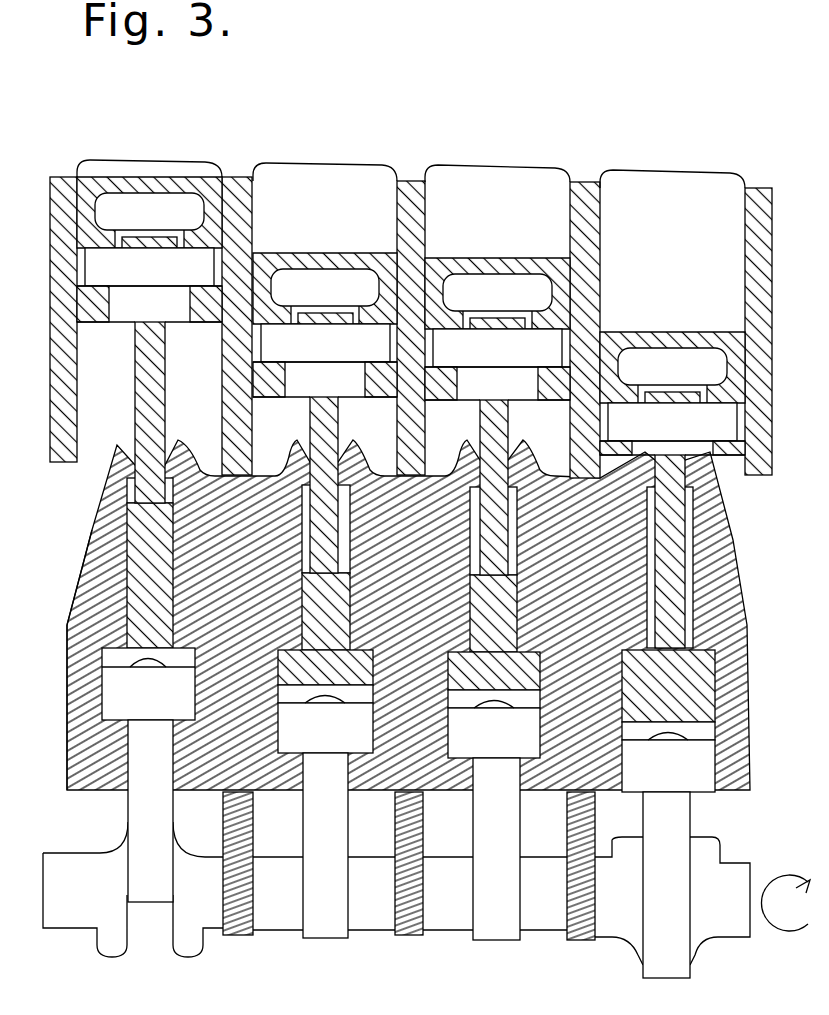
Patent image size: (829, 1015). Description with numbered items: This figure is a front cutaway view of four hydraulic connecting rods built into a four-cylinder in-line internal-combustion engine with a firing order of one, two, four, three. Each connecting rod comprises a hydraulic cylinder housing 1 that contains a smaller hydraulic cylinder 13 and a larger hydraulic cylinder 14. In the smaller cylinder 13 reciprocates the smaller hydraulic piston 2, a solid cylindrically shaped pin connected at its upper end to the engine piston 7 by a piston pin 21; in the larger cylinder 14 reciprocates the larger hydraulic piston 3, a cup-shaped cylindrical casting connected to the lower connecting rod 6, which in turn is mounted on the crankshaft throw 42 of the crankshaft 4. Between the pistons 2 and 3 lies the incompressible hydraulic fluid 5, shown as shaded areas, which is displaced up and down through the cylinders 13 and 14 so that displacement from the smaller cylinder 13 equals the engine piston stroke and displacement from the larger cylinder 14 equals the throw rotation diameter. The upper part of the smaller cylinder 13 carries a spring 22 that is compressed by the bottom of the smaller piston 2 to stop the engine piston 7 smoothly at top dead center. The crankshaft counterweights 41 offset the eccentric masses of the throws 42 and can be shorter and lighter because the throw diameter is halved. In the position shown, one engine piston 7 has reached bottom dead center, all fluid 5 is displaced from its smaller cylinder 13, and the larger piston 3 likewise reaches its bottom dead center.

The hydraulic cylinder housing 1 is at (117, 450).
The smaller hydraulic piston 2 is at (140, 362).
The larger hydraulic piston 3 is at (86, 678).
The crankshaft 4 is at (210, 912).
The hydraulic fluid 5 is at (125, 517).
The lower connecting rod 6 is at (136, 798).
The engine piston 7 is at (217, 186).
The smaller hydraulic cylinder 13 is at (122, 553).
The larger hydraulic cylinder 14 is at (72, 700).
The piston pin 21 is at (58, 282).
The spring 22 is at (130, 474).
The crankshaft counterweights 41 is at (100, 937).
The crankshaft throw 42 is at (178, 845).